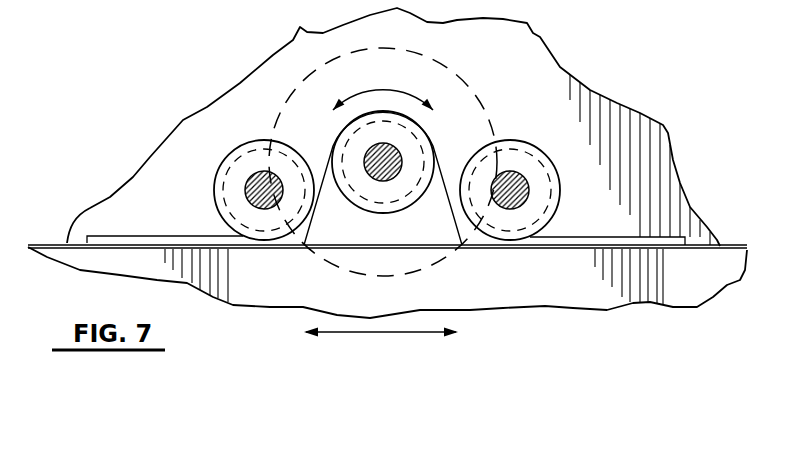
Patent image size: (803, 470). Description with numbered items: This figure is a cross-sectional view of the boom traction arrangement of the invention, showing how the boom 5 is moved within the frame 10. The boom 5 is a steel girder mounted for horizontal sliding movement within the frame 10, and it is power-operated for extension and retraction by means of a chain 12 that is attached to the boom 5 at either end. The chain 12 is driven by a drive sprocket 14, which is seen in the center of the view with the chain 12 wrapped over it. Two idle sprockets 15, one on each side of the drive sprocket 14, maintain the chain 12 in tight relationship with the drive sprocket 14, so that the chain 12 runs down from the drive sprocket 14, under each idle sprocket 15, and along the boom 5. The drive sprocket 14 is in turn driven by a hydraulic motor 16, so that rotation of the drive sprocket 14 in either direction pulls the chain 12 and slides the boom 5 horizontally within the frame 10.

The boom 5 is at (550, 282).
The frame 10 is at (552, 72).
The chain 12 is at (143, 236).
The drive sprocket 14 is at (376, 196).
The idle sprockets 15 is at (230, 180).
The hydraulic motor 16 is at (284, 94).